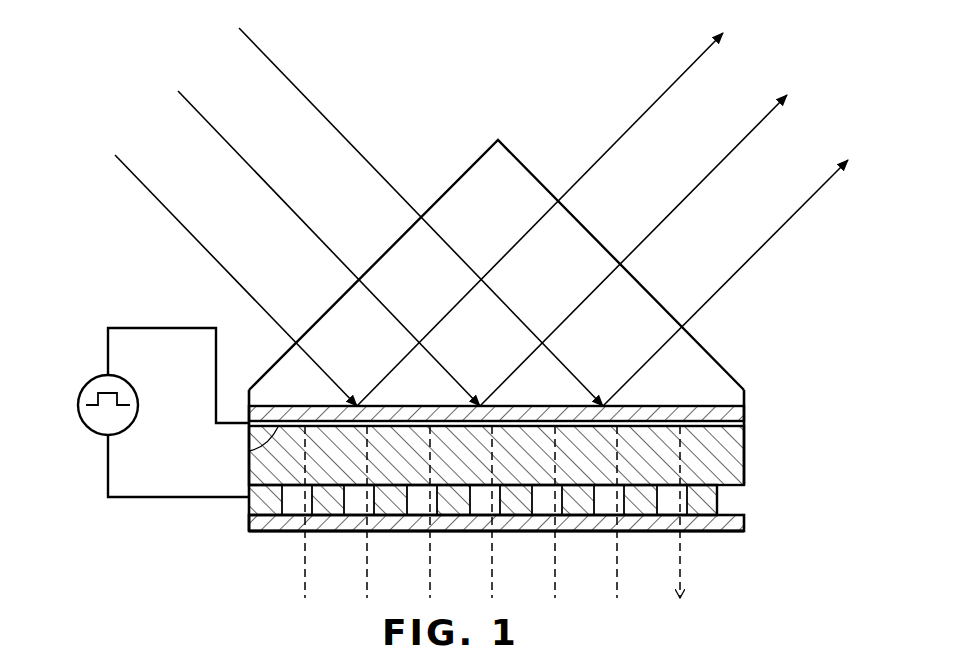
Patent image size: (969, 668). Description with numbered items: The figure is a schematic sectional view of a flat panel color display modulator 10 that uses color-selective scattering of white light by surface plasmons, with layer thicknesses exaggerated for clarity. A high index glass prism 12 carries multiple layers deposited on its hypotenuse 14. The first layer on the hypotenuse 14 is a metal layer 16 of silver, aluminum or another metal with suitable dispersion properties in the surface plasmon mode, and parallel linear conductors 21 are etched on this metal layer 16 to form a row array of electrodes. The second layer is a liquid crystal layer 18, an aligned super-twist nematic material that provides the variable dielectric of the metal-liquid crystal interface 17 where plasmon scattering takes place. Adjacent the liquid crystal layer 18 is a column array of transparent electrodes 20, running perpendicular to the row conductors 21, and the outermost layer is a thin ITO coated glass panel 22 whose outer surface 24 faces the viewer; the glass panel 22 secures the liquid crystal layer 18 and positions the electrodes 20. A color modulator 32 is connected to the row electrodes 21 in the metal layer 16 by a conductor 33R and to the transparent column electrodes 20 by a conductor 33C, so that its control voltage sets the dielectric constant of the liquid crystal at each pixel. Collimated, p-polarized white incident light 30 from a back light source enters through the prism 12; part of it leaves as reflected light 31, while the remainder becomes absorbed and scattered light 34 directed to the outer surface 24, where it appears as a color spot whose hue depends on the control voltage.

The color display modulator 10 is at (836, 247).
The prism 12 is at (533, 173).
The hypotenuse 14 is at (703, 408).
The metal layer 16 is at (741, 416).
The metal-liquid crystal interface 17 is at (745, 433).
The liquid crystal layer 18 is at (730, 462).
The transparent electrodes 20 is at (717, 503).
The linear conductors 21 is at (249, 451).
The glass panel 22 is at (740, 526).
The outer surface 24 is at (717, 535).
The white incident light 30 is at (323, 116).
The reflected light 31 is at (747, 137).
The color modulator 32 is at (80, 378).
The conductor 33R is at (152, 326).
The conductor 33C is at (158, 499).
The absorbed and scattered light 34 is at (617, 573).